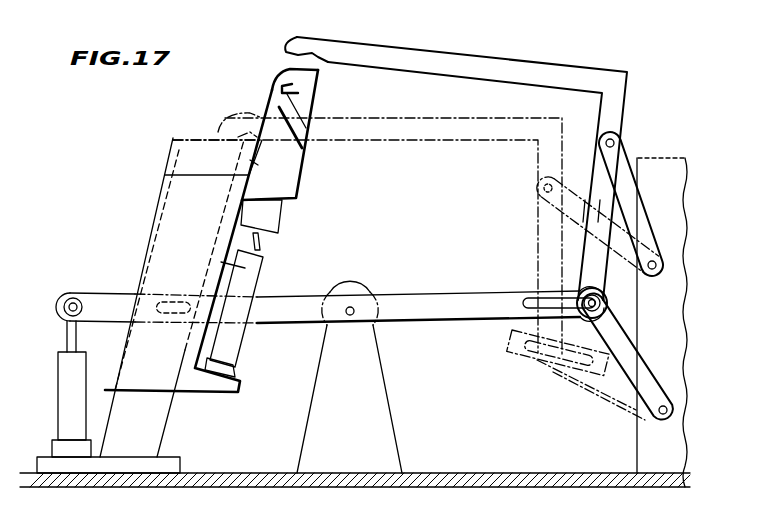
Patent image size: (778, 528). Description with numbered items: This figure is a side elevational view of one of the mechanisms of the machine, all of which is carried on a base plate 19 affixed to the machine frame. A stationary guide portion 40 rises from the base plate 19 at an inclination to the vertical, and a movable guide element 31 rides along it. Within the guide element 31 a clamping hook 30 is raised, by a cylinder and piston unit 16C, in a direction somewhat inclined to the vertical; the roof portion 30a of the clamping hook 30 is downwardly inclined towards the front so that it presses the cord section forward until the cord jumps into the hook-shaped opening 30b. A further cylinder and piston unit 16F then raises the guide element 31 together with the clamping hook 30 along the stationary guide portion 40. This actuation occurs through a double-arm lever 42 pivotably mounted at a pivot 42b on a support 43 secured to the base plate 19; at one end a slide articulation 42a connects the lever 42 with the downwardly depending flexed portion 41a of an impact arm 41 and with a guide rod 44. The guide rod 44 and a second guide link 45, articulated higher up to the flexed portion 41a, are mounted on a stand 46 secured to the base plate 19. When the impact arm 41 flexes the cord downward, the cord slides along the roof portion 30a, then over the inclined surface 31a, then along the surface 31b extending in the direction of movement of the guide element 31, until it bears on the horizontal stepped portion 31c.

The base plate 19 is at (198, 483).
The stationary guide portion 40 is at (146, 408).
The cylinder and piston unit 16F is at (73, 408).
The cylinder and piston unit 16C is at (230, 346).
The double-arm lever 42 is at (305, 307).
The slide articulation 42a is at (584, 296).
The pivot 42b is at (350, 306).
The support 43 is at (365, 385).
The movable guide element 31 is at (283, 178).
The inclined surface 31a is at (278, 106).
The surface 31b is at (252, 162).
The horizontal stepped portion 31c is at (188, 174).
The clamping hook 30 is at (310, 90).
The roof portion 30a is at (297, 72).
The hook-shaped opening 30b is at (306, 128).
The impact arm 41 is at (376, 56).
The downwardly depending flexed portion 41a is at (587, 270).
The second guide link 45 is at (617, 160).
The guide rod 44 is at (643, 377).
The stand 46 is at (662, 313).